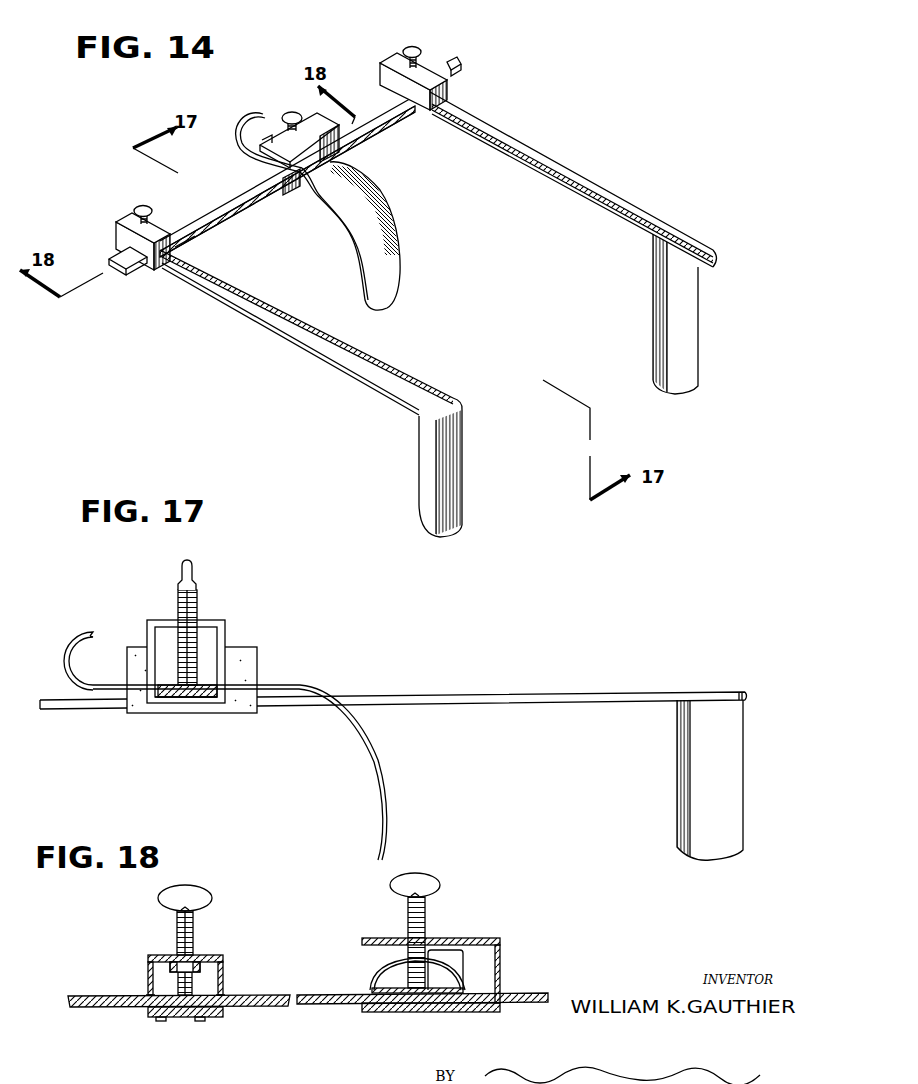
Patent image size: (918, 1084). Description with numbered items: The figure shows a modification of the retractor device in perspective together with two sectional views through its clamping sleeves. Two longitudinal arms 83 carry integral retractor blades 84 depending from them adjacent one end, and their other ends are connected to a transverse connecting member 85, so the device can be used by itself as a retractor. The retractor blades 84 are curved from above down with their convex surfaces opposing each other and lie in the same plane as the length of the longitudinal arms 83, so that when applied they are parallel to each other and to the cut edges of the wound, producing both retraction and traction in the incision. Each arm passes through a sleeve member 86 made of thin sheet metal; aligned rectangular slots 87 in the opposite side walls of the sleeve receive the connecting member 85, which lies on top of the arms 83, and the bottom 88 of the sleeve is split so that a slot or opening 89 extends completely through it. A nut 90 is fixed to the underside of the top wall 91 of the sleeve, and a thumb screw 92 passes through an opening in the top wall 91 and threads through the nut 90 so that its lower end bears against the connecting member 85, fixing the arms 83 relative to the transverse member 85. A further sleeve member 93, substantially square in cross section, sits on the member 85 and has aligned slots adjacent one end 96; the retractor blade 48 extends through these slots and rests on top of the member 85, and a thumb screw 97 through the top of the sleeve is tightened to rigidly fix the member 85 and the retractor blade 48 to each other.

In FIG. 14, the retractor blade 48 is at (389, 223).
In FIG. 17, the retractor blade 48 is at (277, 690).
In FIG. 18, the retractor blade 48 is at (447, 987).
In FIG. 14, the longitudinal arms 83 is at (266, 305).
In FIG. 17, the longitudinal arms 83 is at (517, 693).
In FIG. 18, the longitudinal arms 83 is at (160, 1014).
In FIG. 14, the retractor blades 84 is at (662, 343).
In FIG. 17, the retractor blades 84 is at (687, 772).
In FIG. 14, the transverse connecting member 85 is at (218, 204).
In FIG. 17, the transverse connecting member 85 is at (167, 696).
In FIG. 18, the transverse connecting member 85 is at (283, 996).
In FIG. 14, the sleeve members 86 is at (127, 217).
In FIG. 17, the sleeve members 86 is at (240, 657).
In FIG. 18, the sleeve members 86 is at (219, 954).
In FIG. 14, the rectangular slots 87 is at (128, 246).
In FIG. 18, the rectangular slots 87 is at (148, 994).
In FIG. 18, the bottom 88 is at (203, 1019).
In FIG. 18, the slot or opening 89 is at (180, 1018).
In FIG. 18, the nut 90 is at (173, 955).
In FIG. 14, the top wall 91 is at (187, 237).
In FIG. 18, the top wall 91 is at (197, 950).
In FIG. 14, the thumb screw 92 is at (148, 210).
In FIG. 18, the thumb screw 92 is at (207, 897).
In FIG. 14, the sleeve member 93 is at (273, 137).
In FIG. 17, the sleeve member 93 is at (157, 618).
In FIG. 18, the sleeve member 93 is at (490, 938).
In FIG. 14, the end 96 is at (285, 192).
In FIG. 17, the end 96 is at (193, 700).
In FIG. 18, the end 96 is at (372, 1012).
In FIG. 17, the thumb screw 97 is at (193, 568).
In FIG. 18, the thumb screw 97 is at (426, 903).